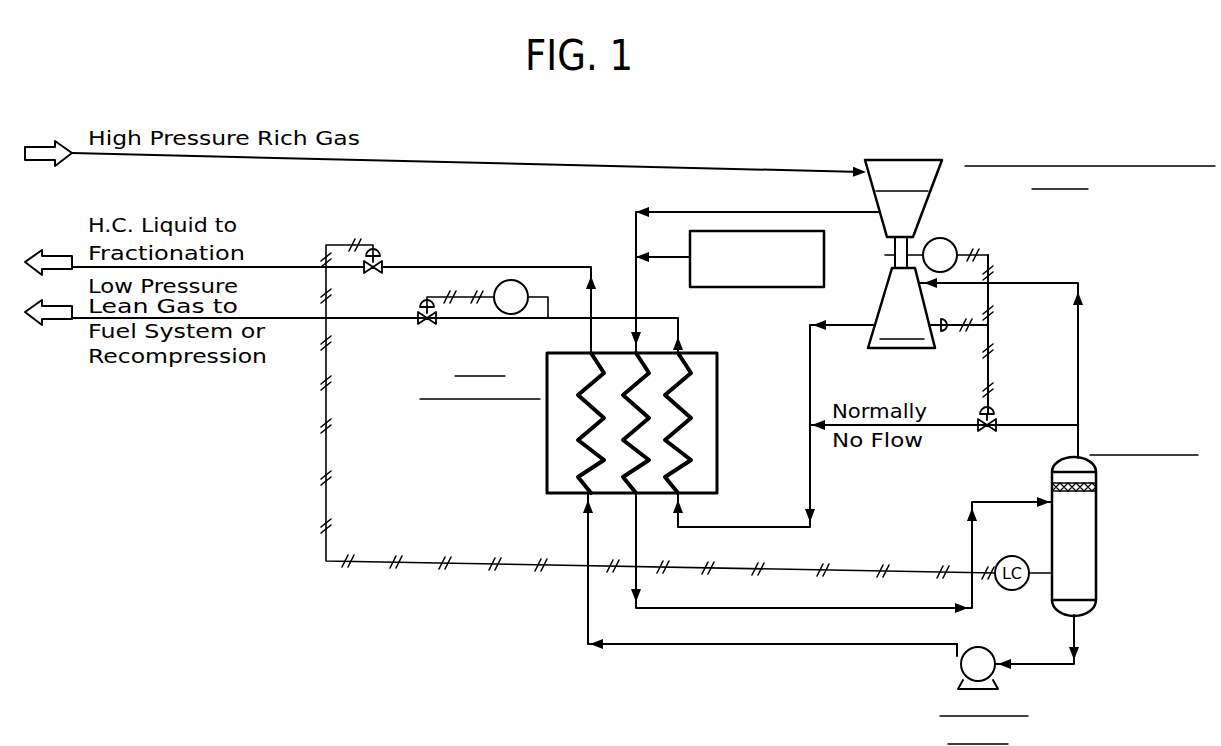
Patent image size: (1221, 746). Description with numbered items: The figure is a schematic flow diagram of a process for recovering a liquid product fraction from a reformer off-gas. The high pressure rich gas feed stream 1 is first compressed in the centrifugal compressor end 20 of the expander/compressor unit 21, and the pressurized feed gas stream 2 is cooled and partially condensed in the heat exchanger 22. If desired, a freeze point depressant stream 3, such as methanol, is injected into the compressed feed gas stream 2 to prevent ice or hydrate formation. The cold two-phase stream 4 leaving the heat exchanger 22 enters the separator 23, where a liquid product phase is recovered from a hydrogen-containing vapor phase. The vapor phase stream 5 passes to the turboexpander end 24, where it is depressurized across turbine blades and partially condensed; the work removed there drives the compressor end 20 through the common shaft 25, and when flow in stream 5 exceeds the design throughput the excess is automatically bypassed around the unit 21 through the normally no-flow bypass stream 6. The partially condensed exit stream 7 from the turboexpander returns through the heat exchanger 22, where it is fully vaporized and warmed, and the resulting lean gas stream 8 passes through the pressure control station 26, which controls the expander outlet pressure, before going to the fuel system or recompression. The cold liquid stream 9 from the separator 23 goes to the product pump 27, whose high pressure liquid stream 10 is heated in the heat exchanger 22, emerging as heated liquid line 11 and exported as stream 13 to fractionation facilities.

The reformer off-gas feed stream 1 is at (753, 168).
The pressurized feed gas stream 2 is at (775, 212).
The freeze point depressant stream 3 is at (672, 257).
The cold two-phase stream 4 is at (802, 611).
The vapor phase stream 5 is at (1035, 283).
The bypass stream 6 is at (1043, 425).
The partially condensed exit stream 7 is at (766, 534).
The warm lean gas stream 8 is at (303, 319).
The cold liquid hydrocarbon stream 9 is at (1037, 661).
The high pressure liquid stream 10 is at (776, 649).
The heated liquid line 11 is at (564, 267).
The liquid product export stream 13 is at (309, 266).
The centrifugal compressor end 20 is at (906, 158).
The expander/compressor unit 21 is at (1025, 231).
The heat exchanger 22 is at (540, 420).
The separator 23 is at (1100, 495).
The turboexpander end 24 is at (874, 310).
The common shaft 25 is at (885, 258).
The pressure control station 26 is at (412, 301).
The product pump 27 is at (950, 671).